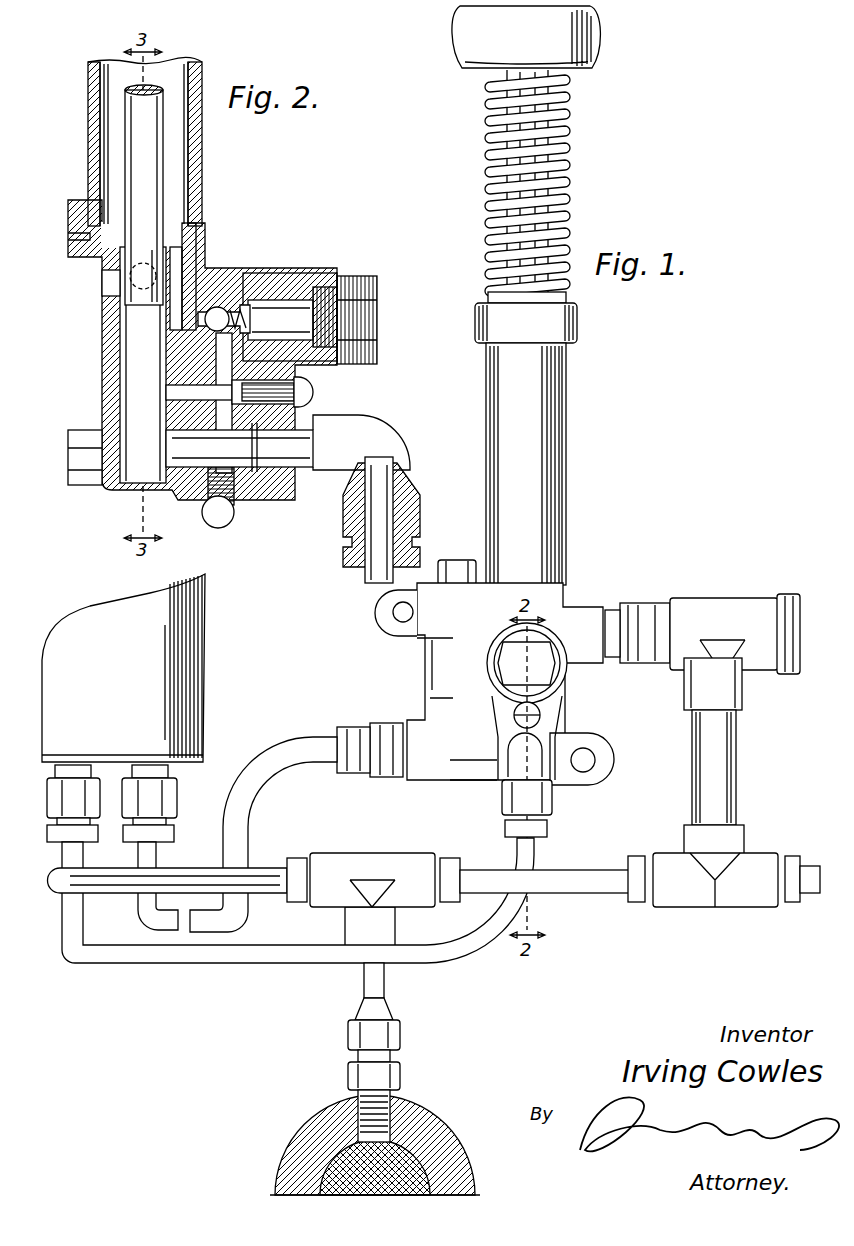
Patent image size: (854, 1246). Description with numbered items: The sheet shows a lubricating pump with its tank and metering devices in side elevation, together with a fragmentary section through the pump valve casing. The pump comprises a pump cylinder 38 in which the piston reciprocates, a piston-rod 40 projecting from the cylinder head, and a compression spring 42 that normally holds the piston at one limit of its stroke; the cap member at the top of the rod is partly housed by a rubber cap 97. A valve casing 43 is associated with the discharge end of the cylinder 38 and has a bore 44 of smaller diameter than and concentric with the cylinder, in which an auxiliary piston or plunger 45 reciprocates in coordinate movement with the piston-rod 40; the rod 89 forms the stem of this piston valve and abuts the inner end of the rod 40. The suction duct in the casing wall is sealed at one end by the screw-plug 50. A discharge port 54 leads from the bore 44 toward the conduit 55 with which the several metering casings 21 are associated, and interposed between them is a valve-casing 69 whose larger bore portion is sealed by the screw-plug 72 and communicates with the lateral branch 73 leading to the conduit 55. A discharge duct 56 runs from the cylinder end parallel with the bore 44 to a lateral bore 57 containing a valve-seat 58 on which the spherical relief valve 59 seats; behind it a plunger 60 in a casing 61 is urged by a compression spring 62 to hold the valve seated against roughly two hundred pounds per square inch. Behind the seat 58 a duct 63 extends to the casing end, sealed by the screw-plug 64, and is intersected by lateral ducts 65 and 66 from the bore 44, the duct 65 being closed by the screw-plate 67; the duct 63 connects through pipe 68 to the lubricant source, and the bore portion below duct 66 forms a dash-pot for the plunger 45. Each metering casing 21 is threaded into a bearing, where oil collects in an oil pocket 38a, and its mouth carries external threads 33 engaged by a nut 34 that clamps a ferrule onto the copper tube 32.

In FIG. 1, the casing 21 is at (400, 1080).
In FIG. 1, the copper tube 32 is at (385, 990).
In FIG. 1, the external threads 33 is at (392, 1055).
In FIG. 1, the nut 34 is at (400, 1034).
In FIG. 2, the pump cylinder 38 is at (90, 155).
In FIG. 1, the pump cylinder 38 is at (567, 410).
In FIG. 1, the oil pocket 38a is at (435, 1130).
In FIG. 1, the piston-rod 40 is at (560, 178).
In FIG. 1, the compression spring 42 is at (553, 188).
In FIG. 2, the valve casing 43 is at (118, 495).
In FIG. 1, the valve casing 43 is at (466, 775).
In FIG. 2, the bore 44 is at (128, 338).
In FIG. 2, the auxiliary piston or plunger 45 is at (128, 290).
In FIG. 1, the screw-plug 50 is at (452, 572).
In FIG. 2, the discharge port 54 is at (103, 285).
In FIG. 1, the conduit 55 is at (740, 770).
In FIG. 2, the discharge duct 56 is at (190, 236).
In FIG. 2, the lateral bore 57 is at (206, 312).
In FIG. 2, the valve-seat 58 is at (210, 328).
In FIG. 2, the relief valve 59 is at (240, 304).
In FIG. 2, the plunger 60 is at (290, 300).
In FIG. 2, the casing 61 is at (272, 282).
In FIG. 1, the casing 61 is at (552, 685).
In FIG. 2, the compression spring 62 is at (380, 317).
In FIG. 2, the bore or duct 63 is at (214, 412).
In FIG. 2, the screw-plug 64 is at (228, 522).
In FIG. 2, the lateral duct 65 is at (178, 392).
In FIG. 2, the lateral duct 66 is at (190, 497).
In FIG. 2, the screw-plate 67 is at (312, 392).
In FIG. 1, the screw-plate 67 is at (547, 715).
In FIG. 2, the pipe 68 is at (363, 570).
In FIG. 1, the pipe 68 is at (540, 858).
In FIG. 1, the valve-casing 69 is at (705, 612).
In FIG. 1, the screw-plug 72 is at (788, 605).
In FIG. 1, the lateral branch 73 is at (742, 705).
In FIG. 2, the rod 89 is at (162, 152).
In FIG. 1, the rubber cap 97 is at (597, 22).